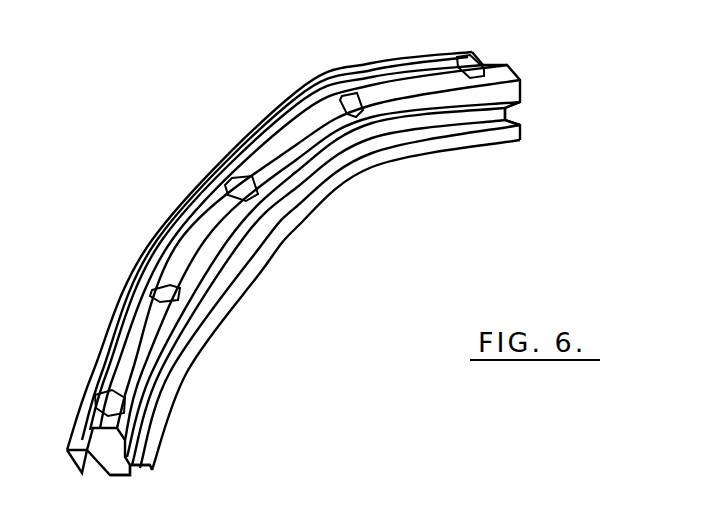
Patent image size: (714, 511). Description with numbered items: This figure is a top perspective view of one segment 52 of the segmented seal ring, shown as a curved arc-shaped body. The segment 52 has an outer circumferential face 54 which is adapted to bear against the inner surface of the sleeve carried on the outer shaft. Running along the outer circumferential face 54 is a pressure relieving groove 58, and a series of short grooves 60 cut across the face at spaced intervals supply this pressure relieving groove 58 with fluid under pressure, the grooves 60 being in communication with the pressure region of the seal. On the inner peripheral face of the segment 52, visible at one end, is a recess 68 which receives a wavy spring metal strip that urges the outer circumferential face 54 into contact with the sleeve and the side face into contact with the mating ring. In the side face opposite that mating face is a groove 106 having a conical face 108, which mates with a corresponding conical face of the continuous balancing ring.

The segment 52 is at (283, 284).
The outer circumferential face 54 is at (210, 218).
The pressure relieving groove 58 is at (397, 67).
The grooves 60 is at (472, 70).
The recess 68 is at (136, 471).
The groove 106 is at (137, 452).
The conical face 108 is at (522, 118).